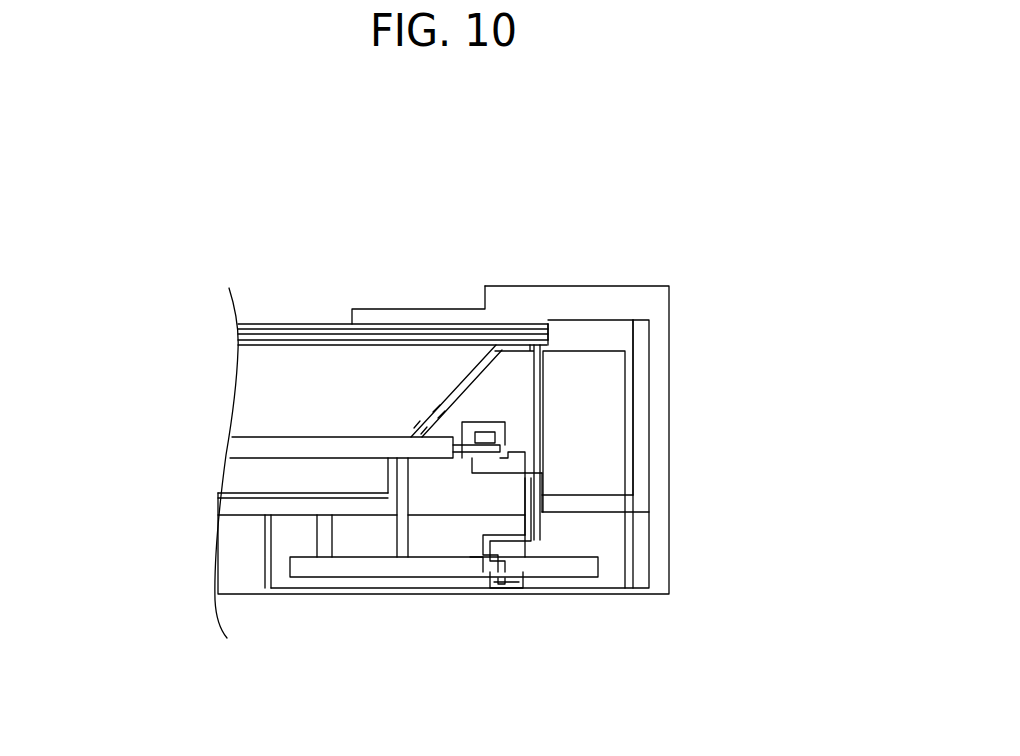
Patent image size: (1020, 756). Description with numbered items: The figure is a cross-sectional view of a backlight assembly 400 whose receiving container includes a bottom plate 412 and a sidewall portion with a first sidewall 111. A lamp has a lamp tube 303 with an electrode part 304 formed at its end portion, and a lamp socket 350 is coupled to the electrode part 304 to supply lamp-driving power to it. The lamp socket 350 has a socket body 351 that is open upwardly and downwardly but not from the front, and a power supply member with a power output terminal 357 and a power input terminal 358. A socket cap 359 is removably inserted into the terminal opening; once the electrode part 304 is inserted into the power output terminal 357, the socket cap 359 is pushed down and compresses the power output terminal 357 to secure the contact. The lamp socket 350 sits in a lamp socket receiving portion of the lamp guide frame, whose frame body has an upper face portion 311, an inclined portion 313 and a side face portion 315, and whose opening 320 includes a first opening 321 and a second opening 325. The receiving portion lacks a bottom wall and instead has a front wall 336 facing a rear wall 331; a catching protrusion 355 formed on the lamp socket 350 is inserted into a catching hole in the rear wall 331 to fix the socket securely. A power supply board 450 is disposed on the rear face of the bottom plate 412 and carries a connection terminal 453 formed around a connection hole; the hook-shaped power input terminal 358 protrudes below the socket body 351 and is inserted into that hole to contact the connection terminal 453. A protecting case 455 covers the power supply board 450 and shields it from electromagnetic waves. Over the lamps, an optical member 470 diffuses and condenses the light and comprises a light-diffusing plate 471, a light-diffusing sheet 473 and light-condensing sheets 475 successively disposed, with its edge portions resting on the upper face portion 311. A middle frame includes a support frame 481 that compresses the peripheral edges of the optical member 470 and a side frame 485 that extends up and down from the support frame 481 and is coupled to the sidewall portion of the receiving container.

The backlight assembly 400 is at (475, 138).
The optical member 470 is at (320, 341).
The light-condensing sheets 475 is at (238, 325).
The light-diffusing sheet 473 is at (238, 335).
The light-diffusing plate 471 is at (238, 345).
The opening 320 is at (404, 315).
The first opening 321 is at (417, 430).
The second opening 325 is at (405, 425).
The support frame 481 is at (462, 309).
The inclined portion 313 is at (444, 412).
The upper face portion 311 is at (548, 324).
The side face portion 315 is at (628, 360).
The first sidewall 111 is at (643, 383).
The socket cap 359 is at (505, 425).
The power output terminal 357 is at (495, 437).
The electrode part 304 is at (540, 473).
The side frame 485 is at (668, 548).
The lamp tube 303 is at (237, 450).
The lamp socket 350 is at (430, 473).
The bottom plate 412 is at (248, 507).
The power supply board 450 is at (343, 572).
The front wall 336 is at (400, 538).
The protecting case 455 is at (428, 572).
The connection terminal 453 is at (477, 577).
The power input terminal 358 is at (515, 588).
The rear wall 331 is at (540, 537).
The socket body 351 is at (540, 526).
The catching protrusion 355 is at (545, 476).